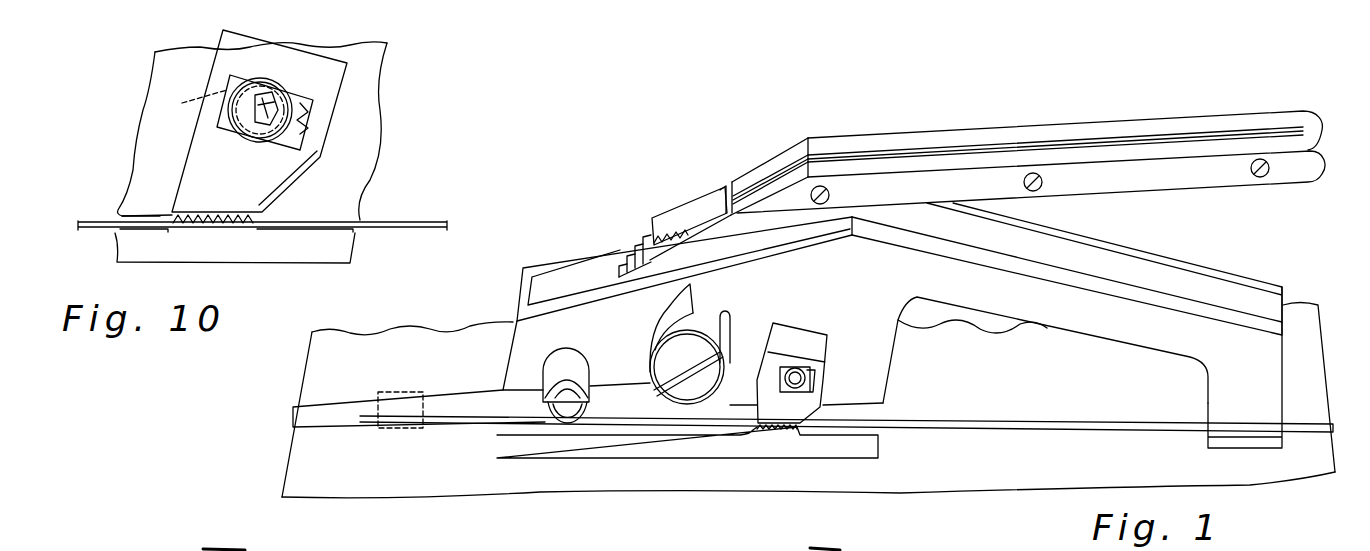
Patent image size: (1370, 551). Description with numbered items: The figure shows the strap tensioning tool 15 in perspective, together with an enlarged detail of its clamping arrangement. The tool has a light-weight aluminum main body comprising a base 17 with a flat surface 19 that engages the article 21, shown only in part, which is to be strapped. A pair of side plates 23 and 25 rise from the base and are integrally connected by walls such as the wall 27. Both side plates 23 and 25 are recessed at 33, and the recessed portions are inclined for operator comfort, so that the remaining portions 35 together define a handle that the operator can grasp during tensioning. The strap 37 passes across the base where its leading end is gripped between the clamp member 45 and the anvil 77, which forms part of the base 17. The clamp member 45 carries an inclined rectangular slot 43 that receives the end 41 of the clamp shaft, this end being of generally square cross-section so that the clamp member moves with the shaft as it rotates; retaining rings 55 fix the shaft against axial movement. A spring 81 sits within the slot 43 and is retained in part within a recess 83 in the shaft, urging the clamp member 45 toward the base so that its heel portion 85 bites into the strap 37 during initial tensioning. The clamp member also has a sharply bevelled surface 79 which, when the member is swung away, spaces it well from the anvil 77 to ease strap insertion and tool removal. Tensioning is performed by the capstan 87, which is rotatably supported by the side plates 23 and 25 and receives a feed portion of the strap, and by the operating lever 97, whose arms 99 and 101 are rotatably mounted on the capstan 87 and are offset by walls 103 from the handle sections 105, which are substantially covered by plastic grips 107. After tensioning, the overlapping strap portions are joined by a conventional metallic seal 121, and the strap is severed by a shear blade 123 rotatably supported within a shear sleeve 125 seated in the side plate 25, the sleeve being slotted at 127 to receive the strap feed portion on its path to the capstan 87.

In FIG. 1, the tool 15 is at (626, 234).
In FIG. 1, the base 17 is at (558, 445).
In FIG. 1, the flat surface 19 is at (678, 450).
In FIG. 1, the article 21 is at (406, 484).
In FIG. 1, the side plate 23 is at (1096, 241).
In FIG. 1, the side plate 25 is at (1091, 287).
In FIG. 10, the side plate 25 is at (367, 134).
In FIG. 1, the wall 27 is at (519, 296).
In FIG. 1, the recess 33 is at (983, 311).
In FIG. 1, the handle portions 35 is at (1197, 327).
In FIG. 1, the strap 37 is at (320, 417).
In FIG. 10, the strap 37 is at (408, 222).
In FIG. 10, the square cross-section end of clamp shaft 41 is at (190, 104).
In FIG. 10, the inclined rectangular slot 43 is at (220, 120).
In FIG. 1, the clamp member 45 is at (799, 342).
In FIG. 10, the clamp member 45 is at (333, 97).
In FIG. 10, the retaining rings 55 is at (277, 85).
In FIG. 1, the anvil 77 is at (771, 438).
In FIG. 10, the anvil 77 is at (233, 232).
In FIG. 10, the bevelled surface 79 is at (290, 190).
In FIG. 10, the spring 81 is at (293, 127).
In FIG. 10, the recess 83 is at (257, 130).
In FIG. 10, the heel portion 85 is at (122, 216).
In FIG. 1, the capstan 87 is at (705, 306).
In FIG. 1, the operating lever 97 is at (1012, 118).
In FIG. 1, the arm 99 is at (673, 219).
In FIG. 1, the arm 101 is at (699, 231).
In FIG. 1, the walls 103 is at (721, 186).
In FIG. 1, the handle sections 105 is at (917, 150).
In FIG. 1, the grips 107 is at (1150, 120).
In FIG. 1, the metallic seal 121 is at (395, 392).
In FIG. 1, the shear blade 123 is at (577, 380).
In FIG. 1, the shear sleeve 125 is at (553, 371).
In FIG. 1, the slot 127 is at (590, 412).